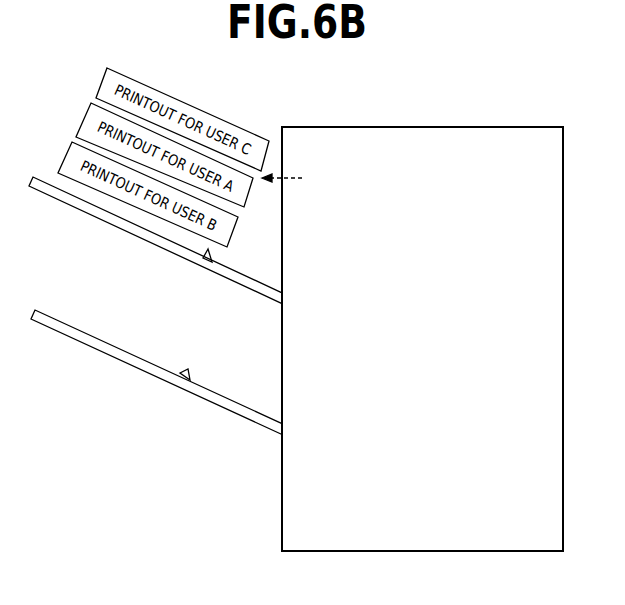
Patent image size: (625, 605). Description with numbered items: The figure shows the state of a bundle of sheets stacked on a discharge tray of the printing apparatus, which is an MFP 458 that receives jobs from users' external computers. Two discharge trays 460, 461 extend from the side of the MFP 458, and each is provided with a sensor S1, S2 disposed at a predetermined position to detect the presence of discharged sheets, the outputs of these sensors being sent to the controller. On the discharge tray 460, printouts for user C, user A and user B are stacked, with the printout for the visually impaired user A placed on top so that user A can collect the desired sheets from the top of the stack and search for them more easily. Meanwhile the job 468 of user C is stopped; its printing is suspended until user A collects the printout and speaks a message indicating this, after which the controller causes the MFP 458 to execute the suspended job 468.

The MFP 458 is at (435, 126).
The job of the user C 468 is at (337, 193).
The discharge tray 460 is at (242, 284).
The discharge tray 461 is at (220, 406).
The sensor S1 is at (205, 260).
The sensor S2 is at (184, 371).